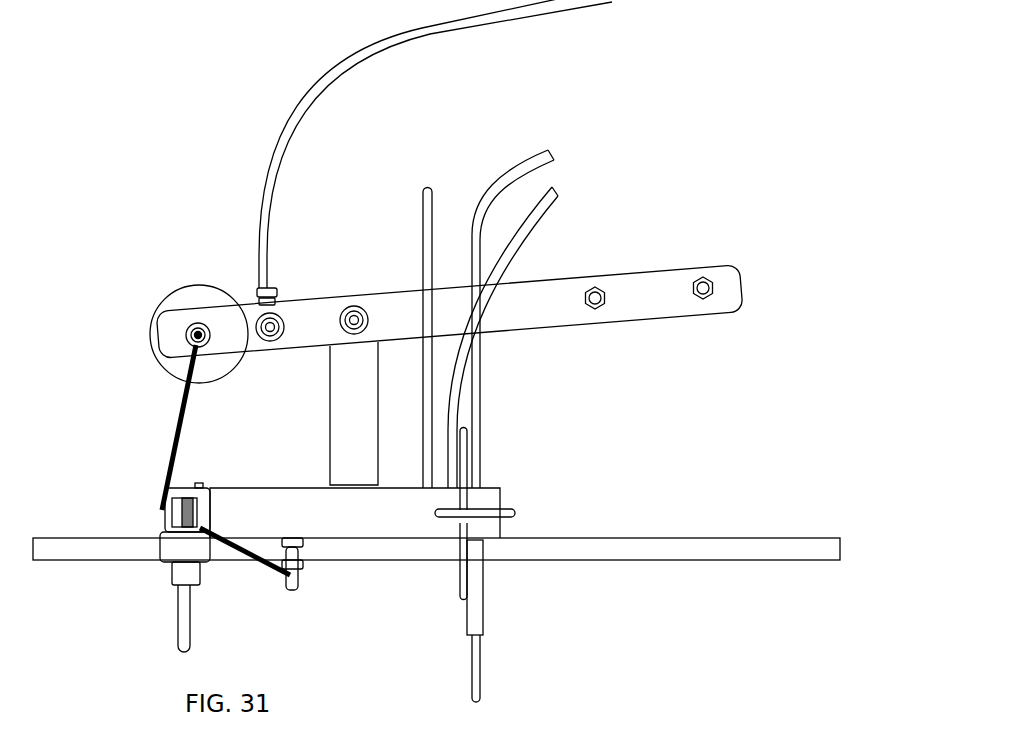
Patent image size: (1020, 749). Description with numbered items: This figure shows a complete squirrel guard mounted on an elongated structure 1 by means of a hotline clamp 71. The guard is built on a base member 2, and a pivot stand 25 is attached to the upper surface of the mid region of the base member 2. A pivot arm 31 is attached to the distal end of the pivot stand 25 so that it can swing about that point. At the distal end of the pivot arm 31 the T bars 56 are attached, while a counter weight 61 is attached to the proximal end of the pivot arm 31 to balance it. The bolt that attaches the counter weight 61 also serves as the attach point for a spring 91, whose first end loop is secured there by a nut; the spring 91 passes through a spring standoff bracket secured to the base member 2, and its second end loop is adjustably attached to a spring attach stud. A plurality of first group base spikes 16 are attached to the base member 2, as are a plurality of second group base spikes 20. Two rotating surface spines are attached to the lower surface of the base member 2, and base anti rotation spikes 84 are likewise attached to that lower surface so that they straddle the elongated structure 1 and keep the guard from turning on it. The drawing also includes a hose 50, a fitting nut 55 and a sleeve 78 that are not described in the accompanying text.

The elongated structure 1 is at (720, 553).
The base member 2 is at (330, 515).
The first group base spikes 16 is at (437, 386).
The second group base spikes 20 is at (486, 376).
The pivot stand 25 is at (340, 370).
The pivot arm 31 is at (640, 290).
The hose 50 is at (292, 115).
The hose fitting nut 55 is at (255, 285).
The T bars 56 is at (603, 305).
The counter weight 61 is at (150, 312).
The hotline clamp 71 is at (165, 560).
The sleeve 78 is at (490, 612).
The base anti rotation spikes 84 is at (472, 660).
The spring 91 is at (148, 505).